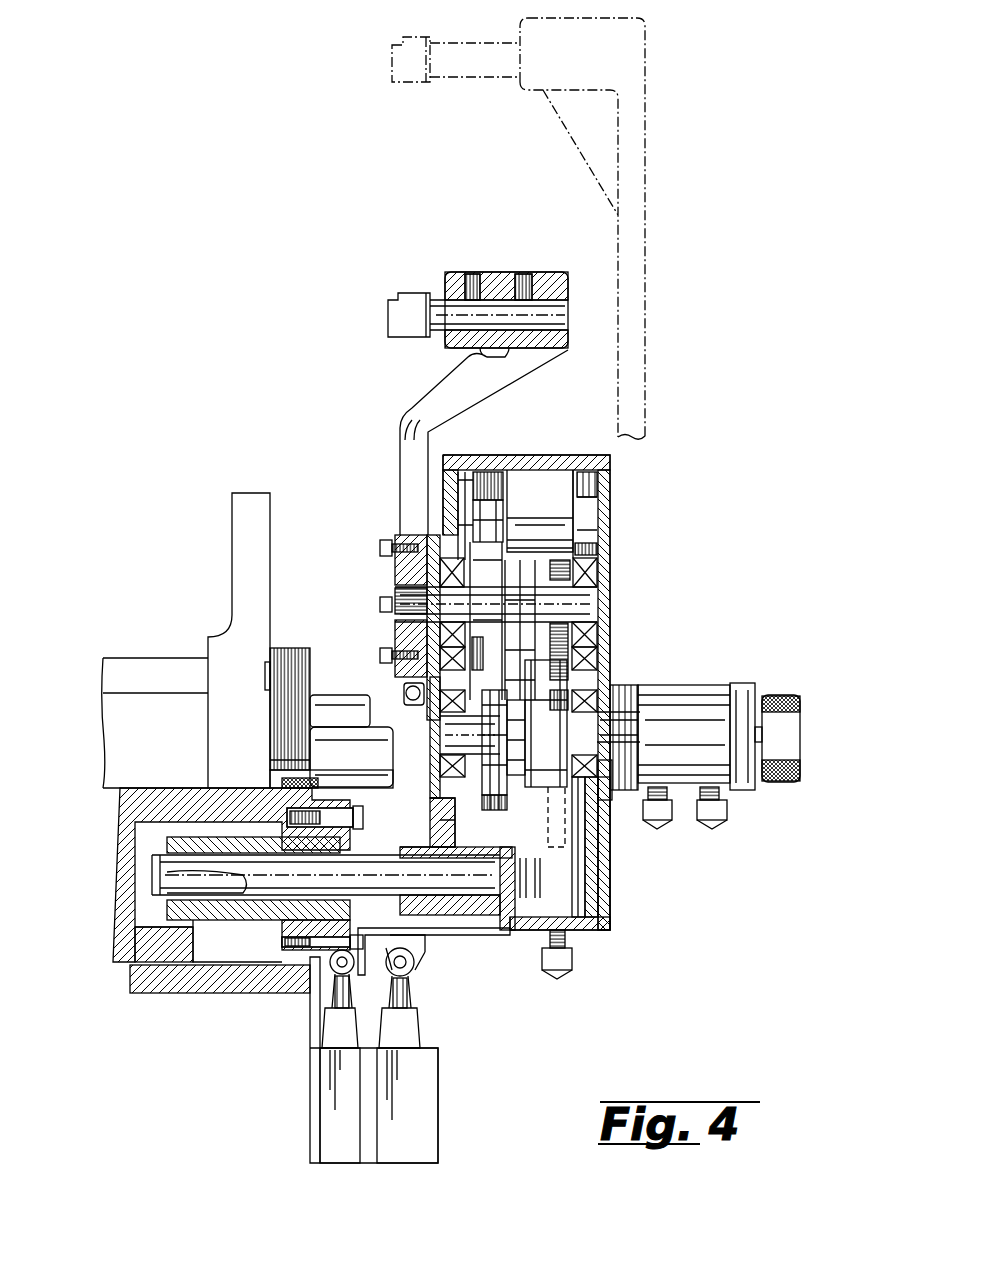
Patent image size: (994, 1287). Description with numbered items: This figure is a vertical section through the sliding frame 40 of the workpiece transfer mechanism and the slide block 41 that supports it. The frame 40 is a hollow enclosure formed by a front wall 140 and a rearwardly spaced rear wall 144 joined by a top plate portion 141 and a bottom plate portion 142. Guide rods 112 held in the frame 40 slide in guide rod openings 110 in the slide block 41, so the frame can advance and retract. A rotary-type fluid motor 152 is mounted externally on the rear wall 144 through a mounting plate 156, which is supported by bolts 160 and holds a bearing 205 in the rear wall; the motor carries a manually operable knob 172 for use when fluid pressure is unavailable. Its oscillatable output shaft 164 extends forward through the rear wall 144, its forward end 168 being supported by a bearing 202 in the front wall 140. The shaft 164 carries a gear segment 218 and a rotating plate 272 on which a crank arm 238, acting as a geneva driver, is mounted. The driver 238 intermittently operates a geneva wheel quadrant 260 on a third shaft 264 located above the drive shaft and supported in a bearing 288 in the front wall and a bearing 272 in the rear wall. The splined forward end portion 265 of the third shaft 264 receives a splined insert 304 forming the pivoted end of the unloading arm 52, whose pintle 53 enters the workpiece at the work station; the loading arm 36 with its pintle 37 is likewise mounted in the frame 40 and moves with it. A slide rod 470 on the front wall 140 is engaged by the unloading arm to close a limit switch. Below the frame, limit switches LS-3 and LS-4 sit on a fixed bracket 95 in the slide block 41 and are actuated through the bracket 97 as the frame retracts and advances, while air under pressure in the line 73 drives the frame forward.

The workpiece loading arm 36 is at (645, 192).
The pintle 37 is at (440, 82).
The sliding frame 40 is at (628, 492).
The slide block 41 is at (197, 993).
The unloading arm 52 is at (400, 424).
The pintle 53 is at (388, 328).
The line 73 is at (572, 952).
The fixed bracket 95 is at (310, 1098).
The threaded opening 97 is at (414, 986).
The guide rod opening 110 is at (152, 878).
The guide rod 112 is at (430, 852).
The front wall 140 is at (441, 470).
The top plate portion 141 is at (517, 458).
The bottom plate portion 142 is at (596, 922).
The rear wall 144 is at (602, 891).
The rotary-type fluid motor 152 is at (723, 643).
The mounting plate 156 is at (610, 795).
The bolts 160 is at (611, 675).
The output shaft 164 is at (602, 722).
The forward end 168 is at (455, 727).
The manually operable knob 172 is at (768, 695).
The bearing 202 is at (434, 777).
The bearing 205 is at (580, 774).
The gear segment 218 is at (559, 746).
The crank arm 238 is at (512, 776).
The geneva wheel quadrant 260 is at (503, 514).
The third shaft 264 is at (527, 597).
The forward end portion 265 is at (395, 633).
The rotating plate 272 is at (607, 580).
The bearing 288 is at (400, 574).
The splined insert 304 is at (395, 578).
The slide rod 470 is at (405, 689).
The limit switch LS-3 is at (412, 1038).
The limit switch LS-4 is at (352, 1012).